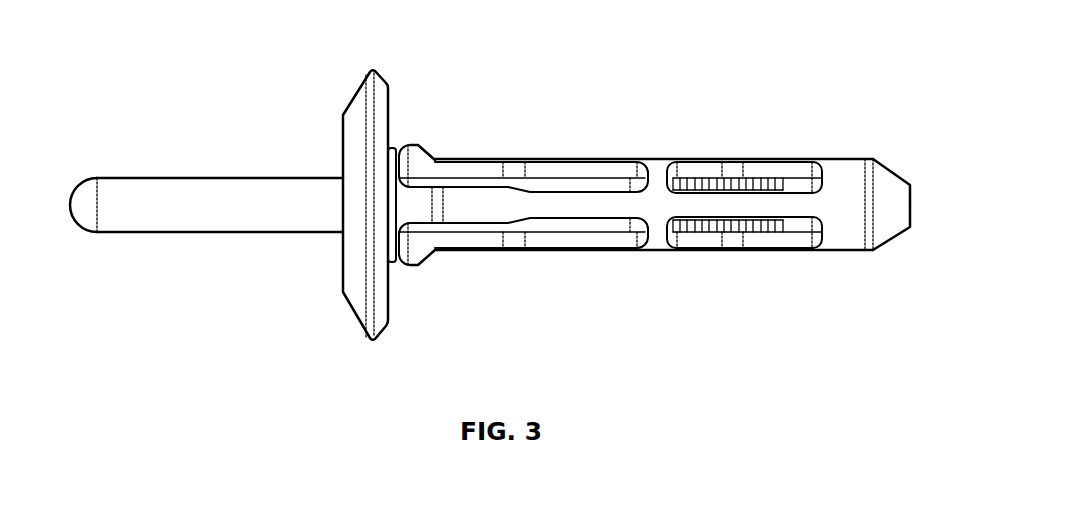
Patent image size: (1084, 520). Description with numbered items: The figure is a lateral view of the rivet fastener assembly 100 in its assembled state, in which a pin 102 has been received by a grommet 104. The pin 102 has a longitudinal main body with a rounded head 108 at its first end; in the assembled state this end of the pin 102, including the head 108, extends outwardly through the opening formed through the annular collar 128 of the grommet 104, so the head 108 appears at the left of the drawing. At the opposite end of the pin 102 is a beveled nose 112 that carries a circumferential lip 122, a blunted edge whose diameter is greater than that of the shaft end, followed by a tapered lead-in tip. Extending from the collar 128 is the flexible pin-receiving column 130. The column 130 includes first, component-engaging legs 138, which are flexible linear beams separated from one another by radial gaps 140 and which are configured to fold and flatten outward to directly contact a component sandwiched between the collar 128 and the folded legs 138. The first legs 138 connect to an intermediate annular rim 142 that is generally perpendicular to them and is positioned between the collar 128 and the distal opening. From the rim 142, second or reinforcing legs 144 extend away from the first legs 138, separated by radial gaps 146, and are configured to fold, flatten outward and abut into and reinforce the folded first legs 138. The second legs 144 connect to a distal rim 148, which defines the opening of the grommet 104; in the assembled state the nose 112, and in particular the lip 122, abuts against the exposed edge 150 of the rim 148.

The rivet fastener assembly 100 is at (516, 76).
The pin 102 is at (209, 245).
The grommet 104 is at (702, 146).
The rounded head 108 is at (88, 195).
The beveled nose 112 is at (895, 183).
The circumferential lip 122 is at (877, 240).
The annular collar 128 is at (370, 82).
The pin-receiving column 130 is at (658, 157).
The component-engaging legs 138 is at (522, 210).
The radial gaps 140 is at (553, 187).
The intermediate annular rim 142 is at (658, 208).
The reinforcing legs 144 is at (800, 207).
The radial gaps 146 is at (790, 177).
The distal rim 148 is at (845, 243).
The edge 150 is at (865, 173).